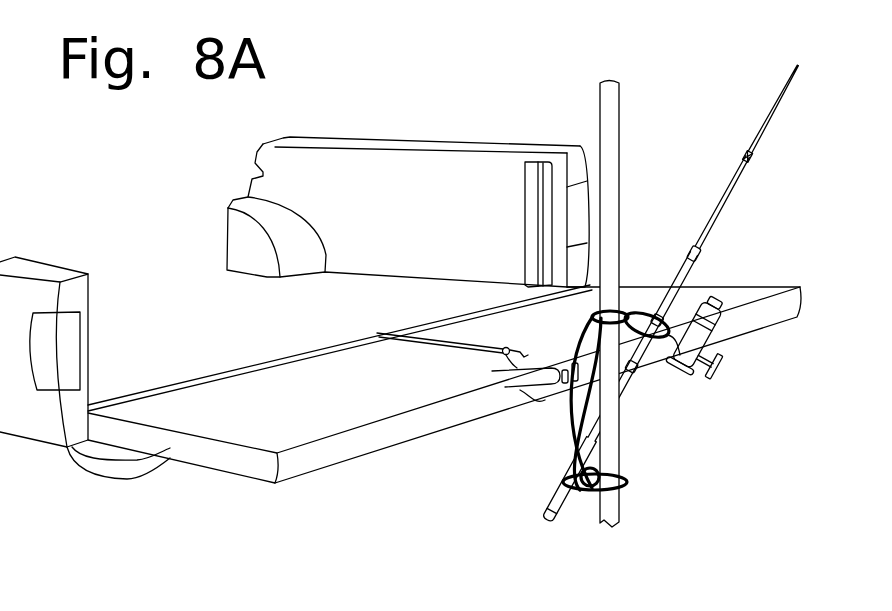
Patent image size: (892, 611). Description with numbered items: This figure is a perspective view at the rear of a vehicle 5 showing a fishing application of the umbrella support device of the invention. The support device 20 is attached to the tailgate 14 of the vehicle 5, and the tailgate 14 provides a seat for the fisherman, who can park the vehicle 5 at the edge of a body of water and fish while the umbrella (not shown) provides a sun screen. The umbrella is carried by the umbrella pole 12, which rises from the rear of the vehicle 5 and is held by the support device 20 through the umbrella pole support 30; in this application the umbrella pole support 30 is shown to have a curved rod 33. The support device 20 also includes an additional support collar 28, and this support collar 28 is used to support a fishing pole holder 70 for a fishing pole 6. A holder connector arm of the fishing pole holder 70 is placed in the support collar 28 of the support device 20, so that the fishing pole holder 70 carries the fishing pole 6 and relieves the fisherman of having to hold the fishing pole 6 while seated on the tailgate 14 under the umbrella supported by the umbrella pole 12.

The vehicle 5 is at (470, 136).
The fishing pole 6 is at (692, 262).
The umbrella pole 12 is at (613, 167).
The tailgate 14 is at (322, 423).
The support device 20 is at (472, 369).
The support collar 28 is at (590, 322).
The umbrella pole support 30 is at (633, 482).
The curved rod 33 is at (540, 406).
The fishing pole holder 70 is at (560, 453).